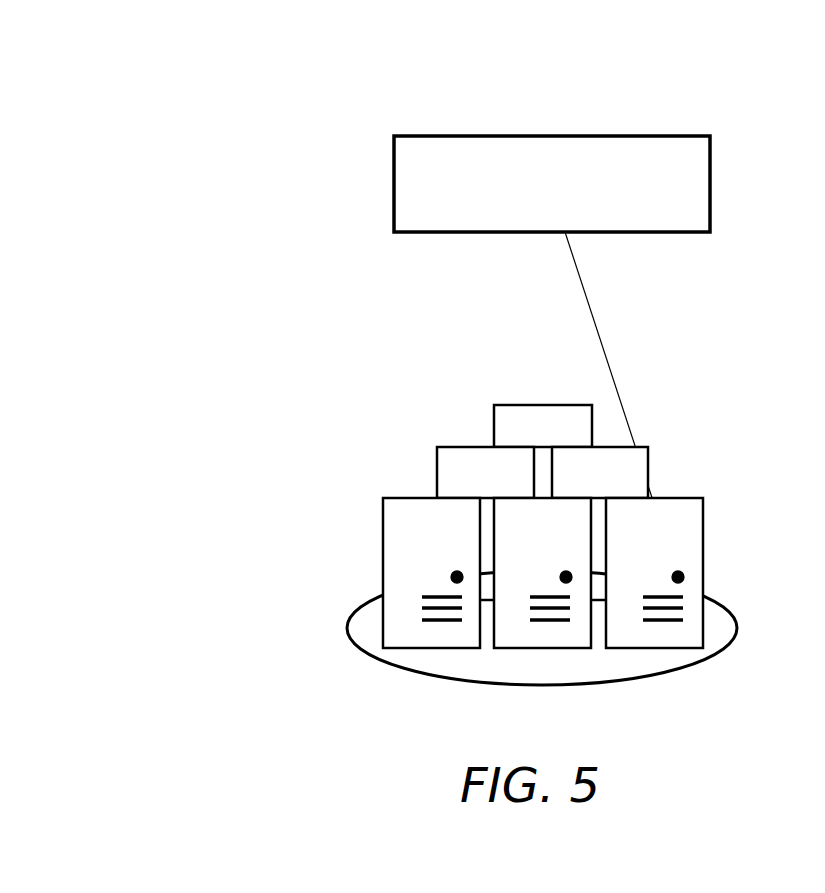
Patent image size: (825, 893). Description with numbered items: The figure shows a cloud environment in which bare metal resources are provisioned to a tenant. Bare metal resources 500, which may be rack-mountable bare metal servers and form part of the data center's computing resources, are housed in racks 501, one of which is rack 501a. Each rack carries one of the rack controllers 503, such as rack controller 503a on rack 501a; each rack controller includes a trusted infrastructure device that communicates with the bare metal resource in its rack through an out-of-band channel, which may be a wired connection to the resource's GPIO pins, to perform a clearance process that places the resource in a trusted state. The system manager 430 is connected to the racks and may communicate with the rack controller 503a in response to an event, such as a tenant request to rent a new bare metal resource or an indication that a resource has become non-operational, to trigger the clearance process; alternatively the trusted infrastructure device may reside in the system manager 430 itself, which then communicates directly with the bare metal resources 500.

The system manager 430 is at (552, 184).
The racks 501 is at (575, 515).
The rack 501a is at (687, 598).
The rack controllers 503 is at (461, 529).
The rack controller 503a is at (678, 577).
The bare metal resources 500 is at (423, 634).